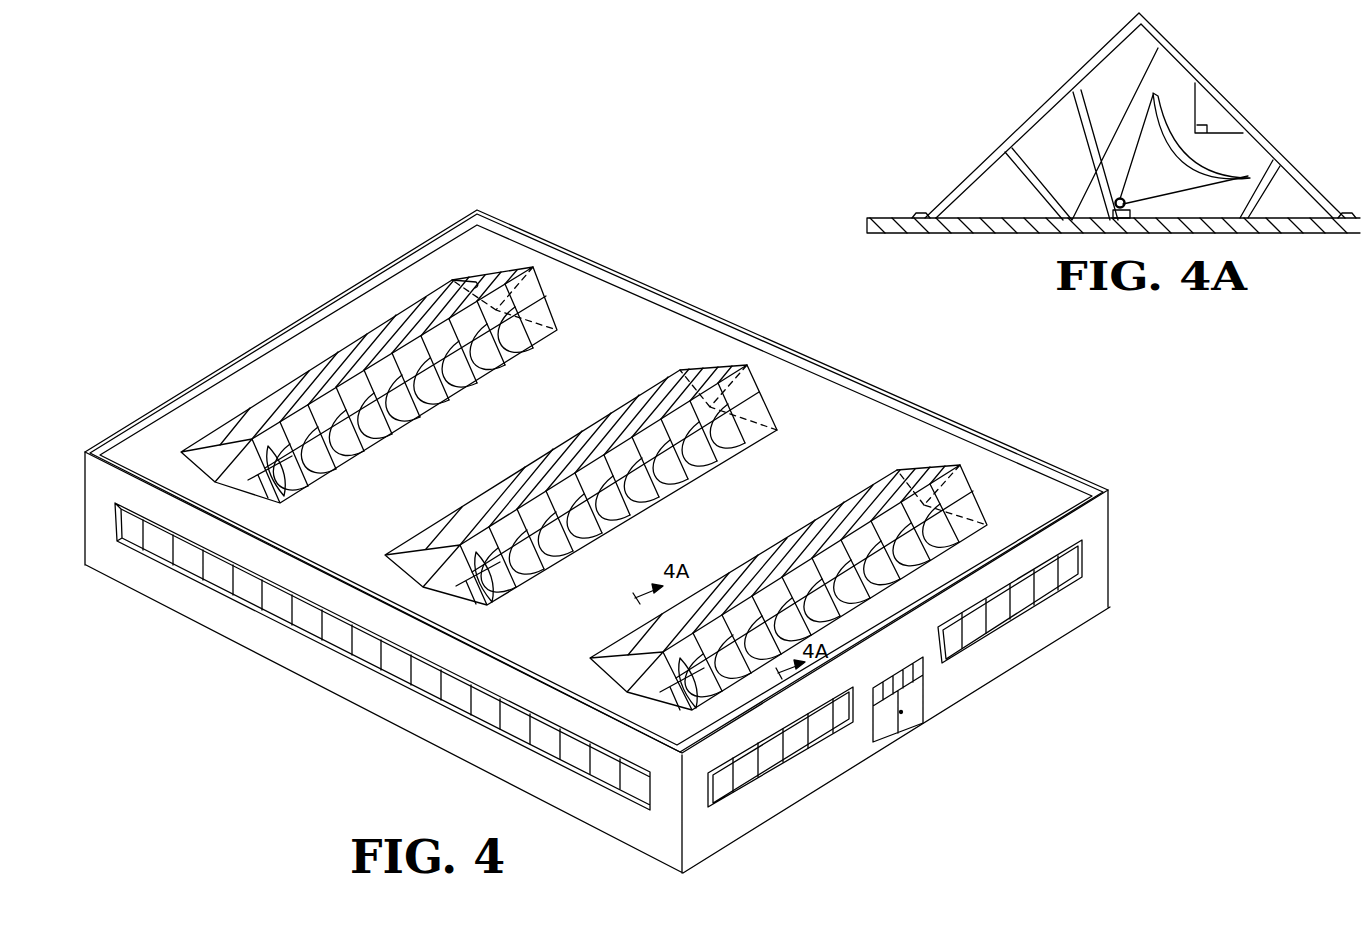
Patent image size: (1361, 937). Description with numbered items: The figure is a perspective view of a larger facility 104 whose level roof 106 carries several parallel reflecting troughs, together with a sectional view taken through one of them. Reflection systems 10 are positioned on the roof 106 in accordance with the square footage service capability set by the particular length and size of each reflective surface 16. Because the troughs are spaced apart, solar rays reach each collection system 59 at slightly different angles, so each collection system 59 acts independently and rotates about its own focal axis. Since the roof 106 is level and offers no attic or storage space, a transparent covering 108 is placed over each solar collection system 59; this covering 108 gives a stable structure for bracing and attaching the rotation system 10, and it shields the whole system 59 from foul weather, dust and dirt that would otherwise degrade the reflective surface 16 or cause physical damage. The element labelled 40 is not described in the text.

In FIG. 4, the reflection system 10 is at (604, 495).
In FIG. 4A, the reflection system 10 is at (1141, 170).
In FIG. 4, the reflective surface 16 is at (350, 444).
In FIG. 4, the end antenna unit 40 is at (264, 482).
In FIG. 4, the solar collection system 59 is at (475, 268).
In FIG. 4, the facility 104 is at (375, 708).
In FIG. 4, the roof 106 is at (792, 373).
In FIG. 4, the transparent covering 108 is at (858, 490).